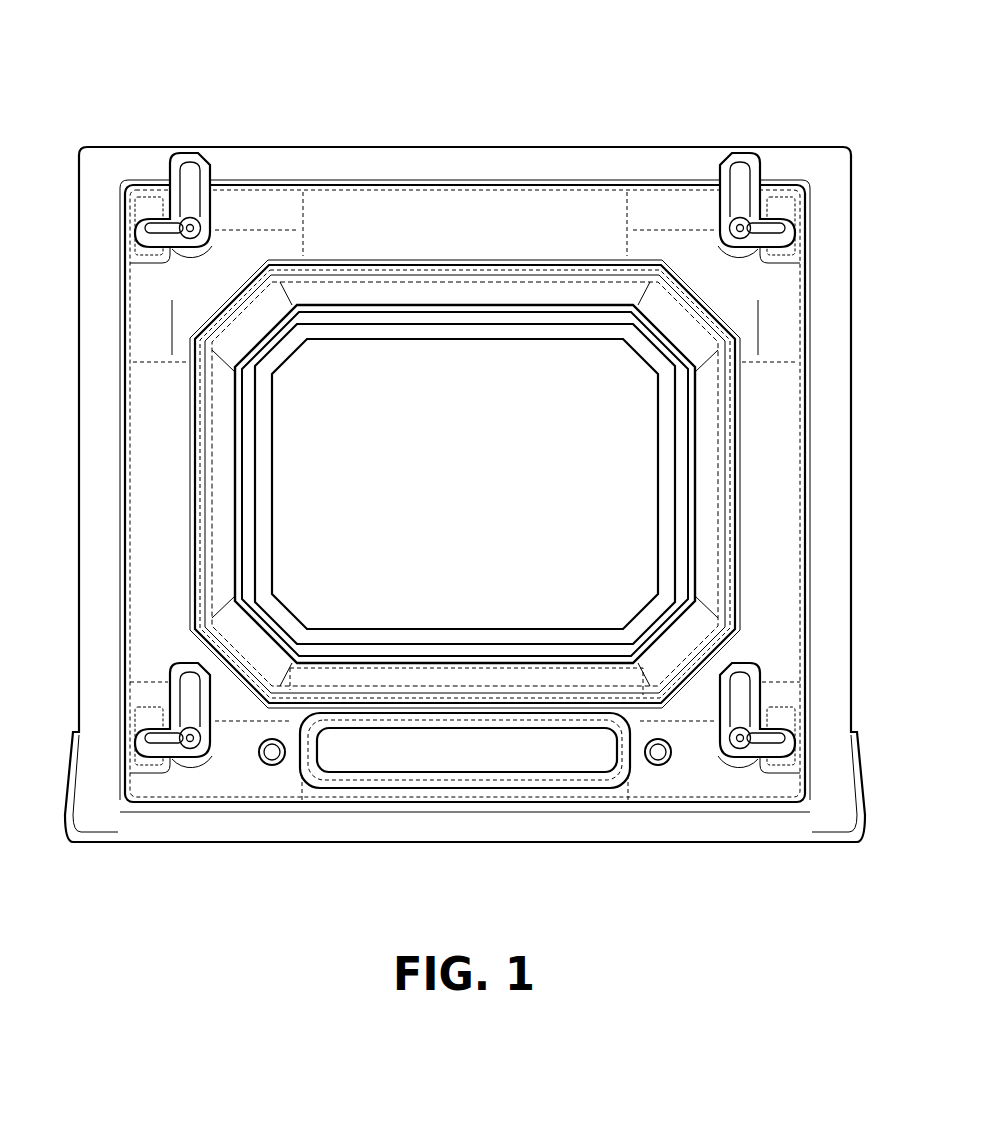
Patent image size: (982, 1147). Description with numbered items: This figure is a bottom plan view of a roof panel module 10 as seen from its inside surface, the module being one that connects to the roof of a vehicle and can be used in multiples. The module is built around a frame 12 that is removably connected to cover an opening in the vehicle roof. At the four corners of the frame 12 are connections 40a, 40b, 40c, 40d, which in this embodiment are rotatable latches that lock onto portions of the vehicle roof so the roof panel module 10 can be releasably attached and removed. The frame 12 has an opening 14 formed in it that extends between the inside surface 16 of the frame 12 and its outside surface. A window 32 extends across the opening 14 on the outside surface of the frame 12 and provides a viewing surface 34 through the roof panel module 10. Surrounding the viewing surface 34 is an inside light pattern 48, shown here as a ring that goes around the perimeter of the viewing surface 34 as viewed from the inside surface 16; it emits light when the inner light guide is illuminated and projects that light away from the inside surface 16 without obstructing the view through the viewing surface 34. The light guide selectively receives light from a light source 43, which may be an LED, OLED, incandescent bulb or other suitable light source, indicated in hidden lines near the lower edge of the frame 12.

The roof panel module 10 is at (716, 86).
The frame 12 is at (335, 142).
The opening 14 is at (752, 524).
The inside surface 16 is at (155, 420).
The window 32 is at (487, 306).
The viewing surface 34 is at (578, 437).
The connection 40a is at (188, 173).
The connection 40b is at (744, 158).
The connection 40c is at (748, 682).
The connection 40d is at (183, 690).
The light source 43 is at (262, 695).
The inside light pattern 48 is at (262, 548).